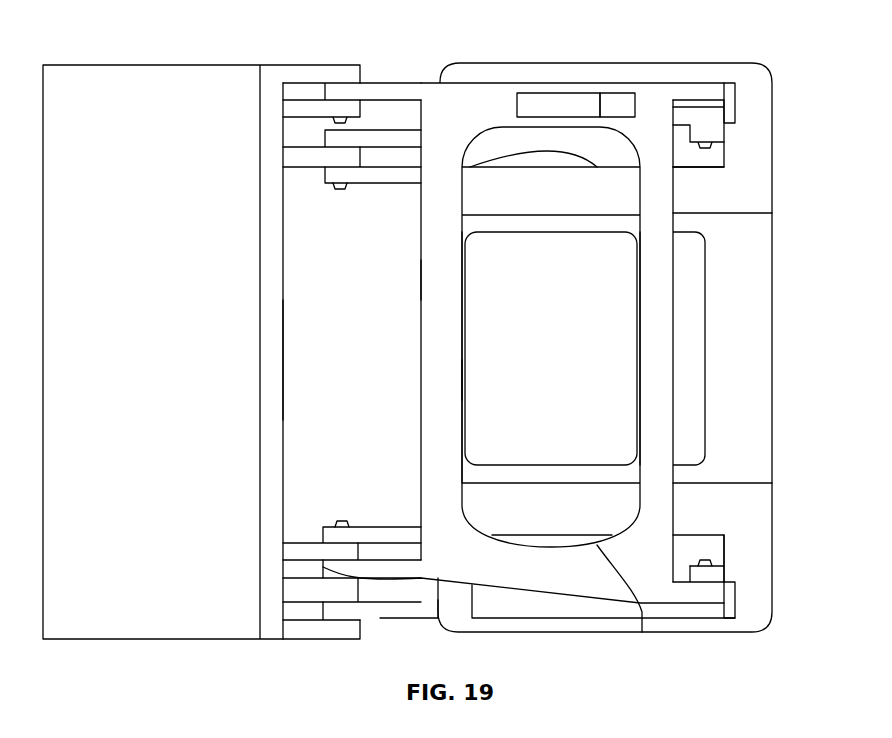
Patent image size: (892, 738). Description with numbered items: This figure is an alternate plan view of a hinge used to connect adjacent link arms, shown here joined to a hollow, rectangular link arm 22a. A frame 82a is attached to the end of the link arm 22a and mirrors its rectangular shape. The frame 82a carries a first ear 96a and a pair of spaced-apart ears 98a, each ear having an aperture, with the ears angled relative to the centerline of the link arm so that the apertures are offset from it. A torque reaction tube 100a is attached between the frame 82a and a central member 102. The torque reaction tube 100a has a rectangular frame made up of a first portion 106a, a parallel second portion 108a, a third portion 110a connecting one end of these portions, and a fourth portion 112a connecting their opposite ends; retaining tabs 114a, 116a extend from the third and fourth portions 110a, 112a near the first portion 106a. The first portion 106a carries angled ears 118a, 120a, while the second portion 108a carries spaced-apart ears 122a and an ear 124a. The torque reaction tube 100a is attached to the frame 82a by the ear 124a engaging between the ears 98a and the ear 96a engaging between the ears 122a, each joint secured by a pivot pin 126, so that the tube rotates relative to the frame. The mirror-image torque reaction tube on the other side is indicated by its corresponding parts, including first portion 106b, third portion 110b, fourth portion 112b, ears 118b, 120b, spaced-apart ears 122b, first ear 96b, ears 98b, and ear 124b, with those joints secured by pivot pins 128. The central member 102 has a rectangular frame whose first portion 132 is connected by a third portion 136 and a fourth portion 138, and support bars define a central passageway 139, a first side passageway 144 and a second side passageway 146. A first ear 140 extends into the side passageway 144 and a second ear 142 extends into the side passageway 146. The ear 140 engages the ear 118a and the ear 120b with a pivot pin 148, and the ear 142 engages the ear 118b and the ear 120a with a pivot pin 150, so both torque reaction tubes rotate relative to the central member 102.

The link arm 22a is at (153, 615).
The pivot pin 128 is at (297, 145).
The frame 82a is at (285, 365).
The ear 124a is at (372, 90).
The ear 124b is at (400, 605).
The spaced-apart ears 98a is at (298, 110).
The spaced-apart ears 98b is at (327, 627).
The pivot pin 126 is at (345, 125).
The spaced-apart ears 122a is at (367, 560).
The spaced-apart ears 122b is at (398, 138).
The first ear 96a is at (300, 545).
The first ear 96b is at (303, 168).
The fourth portion 138 is at (490, 63).
The third portion 136 is at (605, 635).
The fourth portion 112a is at (537, 115).
The fourth portion 112b is at (555, 612).
The retaining tab 116a is at (613, 113).
The third portion 110a is at (505, 572).
The third portion 110b is at (563, 143).
The torque reaction tube 100a is at (656, 333).
The central member 102 is at (600, 468).
The first portion 106a is at (642, 310).
The first portion 106b is at (425, 590).
The retaining tab 114a is at (642, 632).
The second portion 108a is at (433, 285).
The central passageway 139 is at (505, 373).
The first portion 132 is at (765, 362).
The ear 118a is at (718, 612).
The ear 118b is at (703, 113).
The ear 120a is at (705, 84).
The ear 120b is at (728, 620).
The second ear 142 is at (707, 137).
The pivot pin 150 is at (703, 148).
The second side passageway 146 is at (705, 155).
The first side passageway 144 is at (690, 545).
The pivot pin 148 is at (706, 560).
The first ear 140 is at (712, 570).